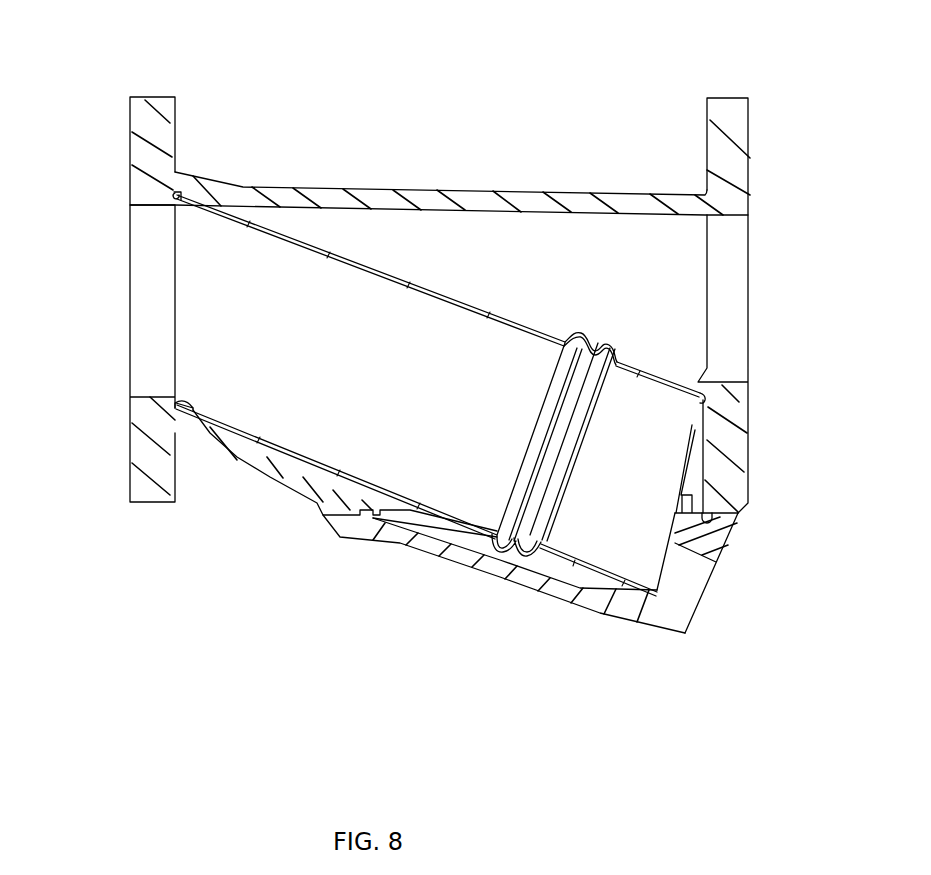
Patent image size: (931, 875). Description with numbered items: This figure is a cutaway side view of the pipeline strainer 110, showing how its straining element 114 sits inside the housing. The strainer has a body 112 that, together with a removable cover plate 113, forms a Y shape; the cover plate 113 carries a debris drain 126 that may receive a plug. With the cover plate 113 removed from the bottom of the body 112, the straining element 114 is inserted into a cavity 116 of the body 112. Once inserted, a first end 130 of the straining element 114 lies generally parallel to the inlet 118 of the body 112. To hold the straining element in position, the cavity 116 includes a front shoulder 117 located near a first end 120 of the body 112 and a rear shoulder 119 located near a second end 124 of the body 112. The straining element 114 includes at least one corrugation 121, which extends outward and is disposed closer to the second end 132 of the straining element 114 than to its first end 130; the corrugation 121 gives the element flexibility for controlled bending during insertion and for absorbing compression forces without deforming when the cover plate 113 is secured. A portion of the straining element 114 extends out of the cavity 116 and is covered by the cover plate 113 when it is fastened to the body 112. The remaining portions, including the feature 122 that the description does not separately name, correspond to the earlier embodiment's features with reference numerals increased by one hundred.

The pipeline strainer 110 is at (362, 108).
The body 112 is at (483, 192).
The cover plate 113 is at (637, 612).
The straining element 114 is at (373, 448).
The cavity 116 is at (527, 293).
The front shoulder 117 is at (180, 193).
The inlet 118 is at (105, 266).
The rear shoulder 119 is at (700, 383).
The first end of the body 120 is at (140, 97).
The corrugation 121 is at (502, 535).
The outlet flange 122 is at (764, 276).
The second end of the body 124 is at (752, 108).
The debris drain 126 is at (692, 575).
The first end of the straining element 130 is at (183, 387).
The second end of the straining element 132 is at (690, 425).